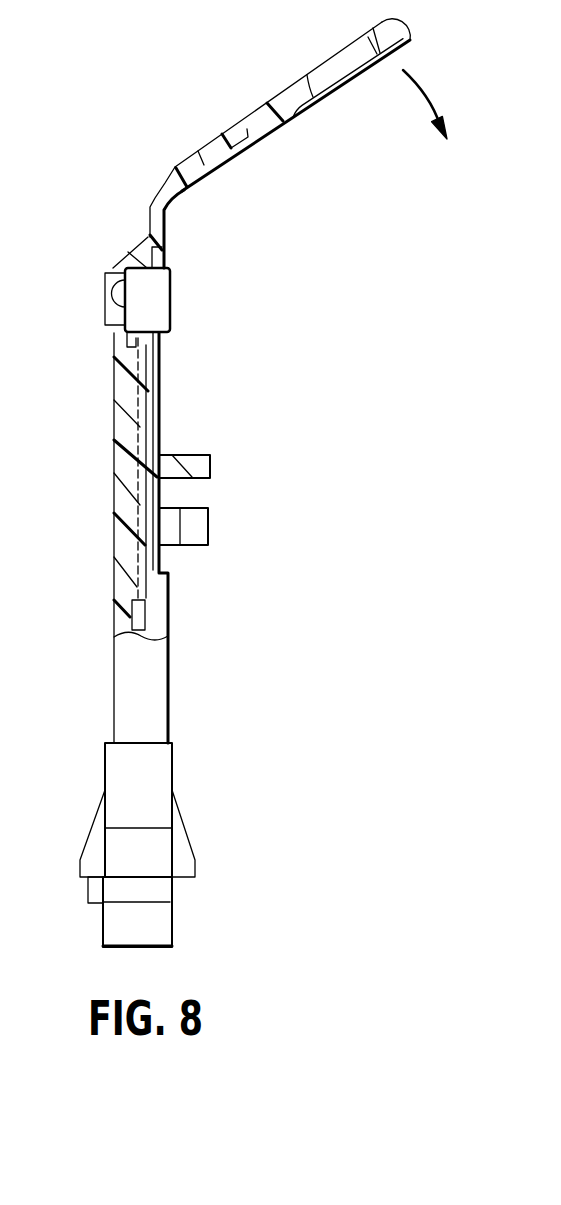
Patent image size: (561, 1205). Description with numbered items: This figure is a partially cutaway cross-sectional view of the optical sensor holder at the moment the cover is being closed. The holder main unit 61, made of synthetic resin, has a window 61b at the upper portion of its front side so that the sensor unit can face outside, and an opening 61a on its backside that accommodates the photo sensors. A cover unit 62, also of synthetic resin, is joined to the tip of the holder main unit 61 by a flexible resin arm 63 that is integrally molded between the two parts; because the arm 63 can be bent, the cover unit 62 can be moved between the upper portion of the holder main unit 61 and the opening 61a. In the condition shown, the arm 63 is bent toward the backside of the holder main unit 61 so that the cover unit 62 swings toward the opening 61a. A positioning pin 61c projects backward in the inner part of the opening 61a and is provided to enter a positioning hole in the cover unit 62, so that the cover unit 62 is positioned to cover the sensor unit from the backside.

The holder main unit 61 is at (114, 557).
The opening 61a is at (160, 407).
The window 61b is at (105, 290).
The positioning pin 61c is at (212, 467).
The cover unit 62 is at (257, 108).
The arm 63 is at (152, 198).